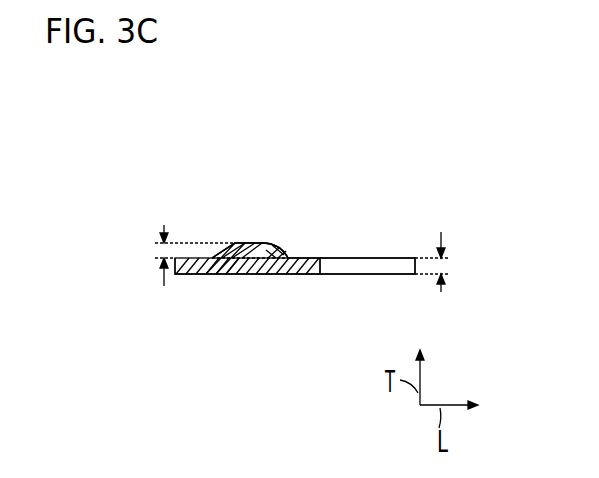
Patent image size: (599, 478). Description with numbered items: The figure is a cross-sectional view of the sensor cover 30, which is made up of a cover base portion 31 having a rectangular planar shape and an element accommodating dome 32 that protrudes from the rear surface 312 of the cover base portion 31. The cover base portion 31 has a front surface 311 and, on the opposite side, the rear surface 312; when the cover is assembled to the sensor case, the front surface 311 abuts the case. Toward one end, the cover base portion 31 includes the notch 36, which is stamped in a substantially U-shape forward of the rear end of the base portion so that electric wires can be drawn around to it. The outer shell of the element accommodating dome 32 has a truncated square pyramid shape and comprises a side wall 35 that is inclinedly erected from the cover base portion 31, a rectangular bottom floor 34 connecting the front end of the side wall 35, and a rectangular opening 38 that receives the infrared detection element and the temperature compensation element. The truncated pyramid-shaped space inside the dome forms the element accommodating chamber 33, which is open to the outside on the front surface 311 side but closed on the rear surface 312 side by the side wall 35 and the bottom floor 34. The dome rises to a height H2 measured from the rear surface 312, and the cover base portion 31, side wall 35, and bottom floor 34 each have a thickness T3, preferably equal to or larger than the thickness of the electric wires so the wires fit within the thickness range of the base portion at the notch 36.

The sensor cover 30 is at (171, 284).
The cover base portion 31 is at (188, 276).
The element accommodating dome 32 is at (318, 186).
The element accommodating chamber 33 is at (245, 276).
The bottom floor 34 is at (243, 245).
The side wall 35 is at (283, 250).
The notch 36 is at (365, 257).
The opening 38 is at (235, 276).
The front surface 311 is at (308, 276).
The rear surface 312 is at (208, 256).
The height H2 is at (195, 237).
The thickness T3 is at (444, 258).